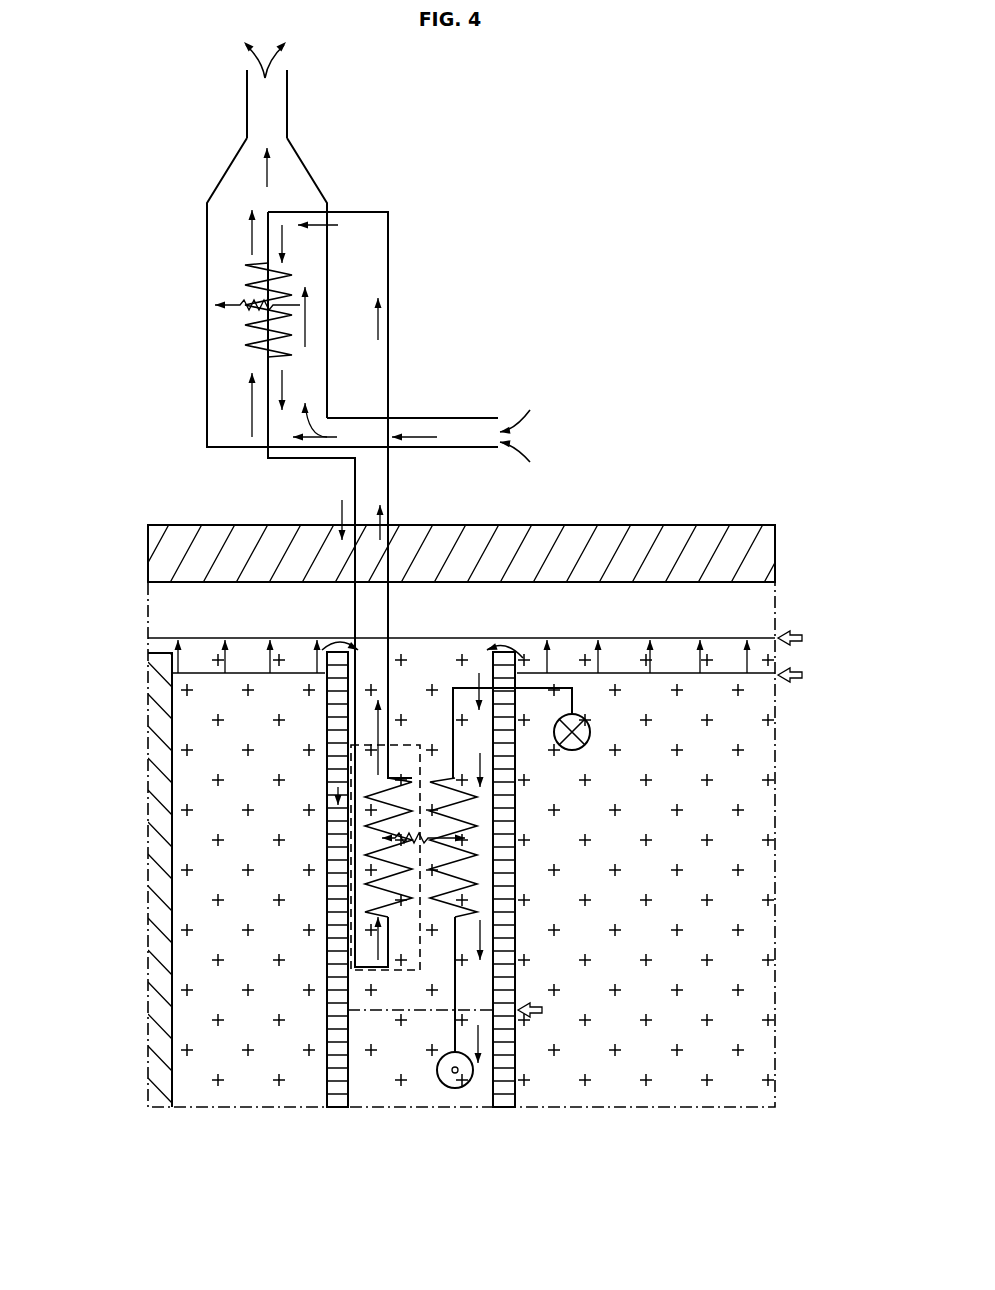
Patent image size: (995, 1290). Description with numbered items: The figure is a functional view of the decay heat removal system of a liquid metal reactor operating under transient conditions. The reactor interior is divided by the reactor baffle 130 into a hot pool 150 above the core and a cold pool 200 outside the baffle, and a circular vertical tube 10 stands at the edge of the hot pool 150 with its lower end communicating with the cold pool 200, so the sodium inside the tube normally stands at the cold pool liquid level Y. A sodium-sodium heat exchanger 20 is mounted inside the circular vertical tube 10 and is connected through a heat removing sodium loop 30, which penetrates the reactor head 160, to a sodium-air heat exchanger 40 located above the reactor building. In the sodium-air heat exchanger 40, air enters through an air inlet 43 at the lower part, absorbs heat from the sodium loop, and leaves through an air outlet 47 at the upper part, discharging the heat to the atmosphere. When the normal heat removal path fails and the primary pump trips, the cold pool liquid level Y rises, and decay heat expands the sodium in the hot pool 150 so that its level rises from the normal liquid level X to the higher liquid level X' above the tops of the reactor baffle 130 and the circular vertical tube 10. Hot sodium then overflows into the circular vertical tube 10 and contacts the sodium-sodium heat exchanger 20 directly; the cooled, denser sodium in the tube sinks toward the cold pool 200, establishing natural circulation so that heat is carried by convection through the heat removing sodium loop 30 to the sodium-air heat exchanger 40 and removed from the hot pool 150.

The circular vertical tube 10 is at (512, 667).
The sodium-sodium heat exchanger 20 is at (400, 740).
The heat removing sodium loop 30 is at (348, 493).
The sodium-air heat exchanger 40 is at (207, 298).
The air inlet 43 is at (447, 418).
The air outlet 47 is at (288, 108).
The reactor baffle 130 is at (148, 728).
The hot pool 150 is at (715, 863).
The reactor head 160 is at (698, 548).
The cold pool 200 is at (423, 1066).
The liquid level of sodium in the hot pool X is at (815, 662).
The raised liquid level of sodium in the hot pool X' is at (816, 625).
The liquid level of sodium in the cold pool Y is at (542, 1008).